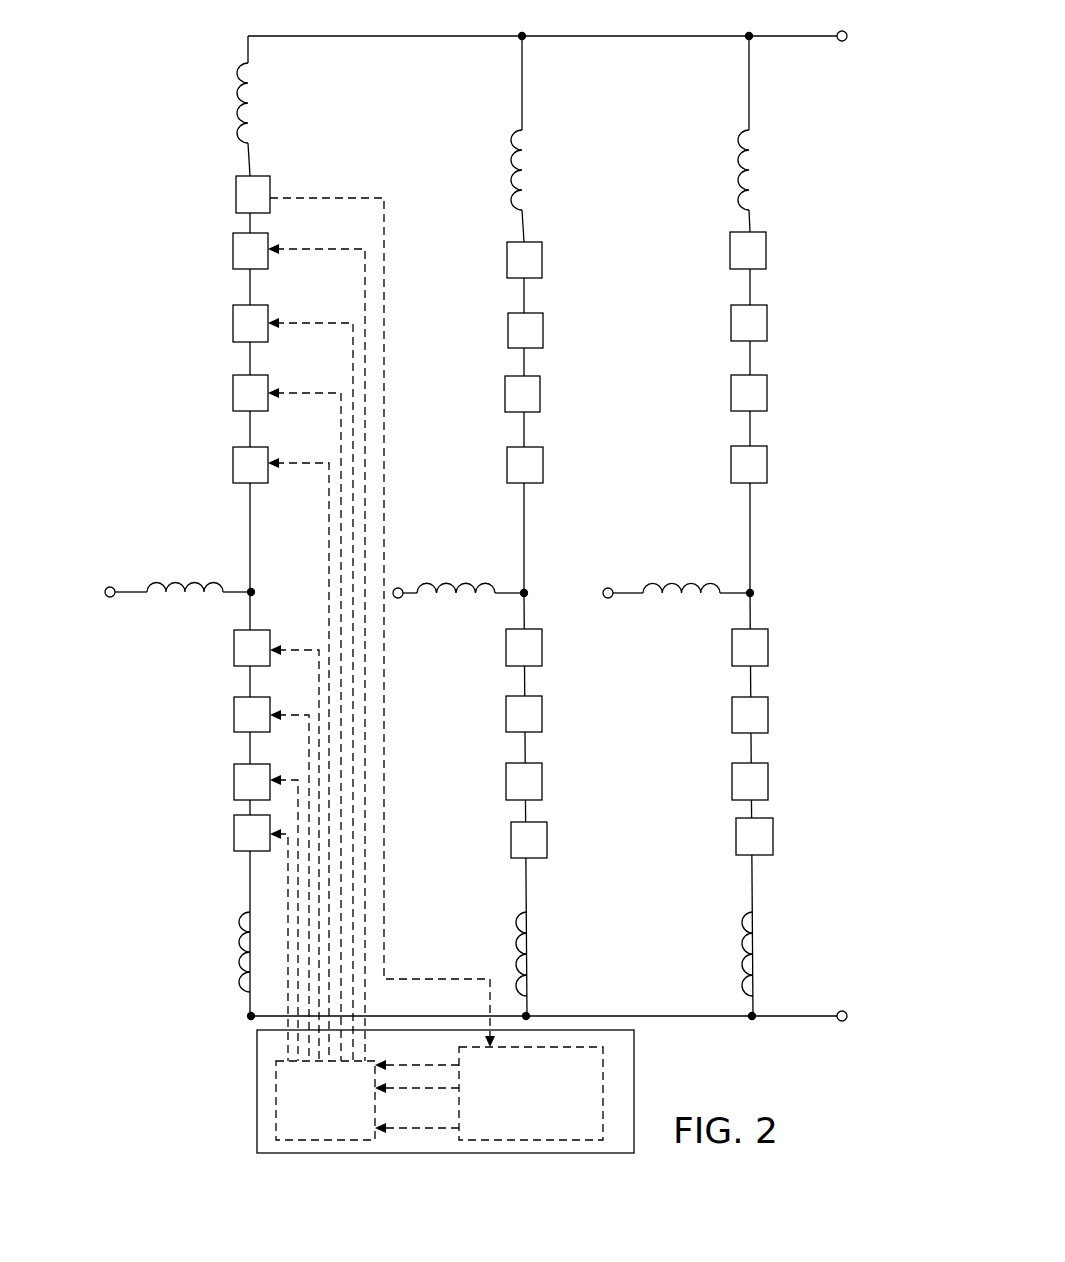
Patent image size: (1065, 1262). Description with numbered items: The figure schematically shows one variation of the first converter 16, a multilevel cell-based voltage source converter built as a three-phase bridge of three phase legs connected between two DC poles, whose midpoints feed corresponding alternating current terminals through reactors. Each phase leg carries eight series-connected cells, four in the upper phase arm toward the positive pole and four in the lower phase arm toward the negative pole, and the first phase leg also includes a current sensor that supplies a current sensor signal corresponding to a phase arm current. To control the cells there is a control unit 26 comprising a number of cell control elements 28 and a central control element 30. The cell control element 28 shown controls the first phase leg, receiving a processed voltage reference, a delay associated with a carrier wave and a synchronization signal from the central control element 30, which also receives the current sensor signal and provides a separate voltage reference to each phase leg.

The first converter 16 is at (200, 39).
The control unit 26 is at (257, 1127).
The cell control element 28 is at (325, 1100).
The central control element 30 is at (531, 1093).